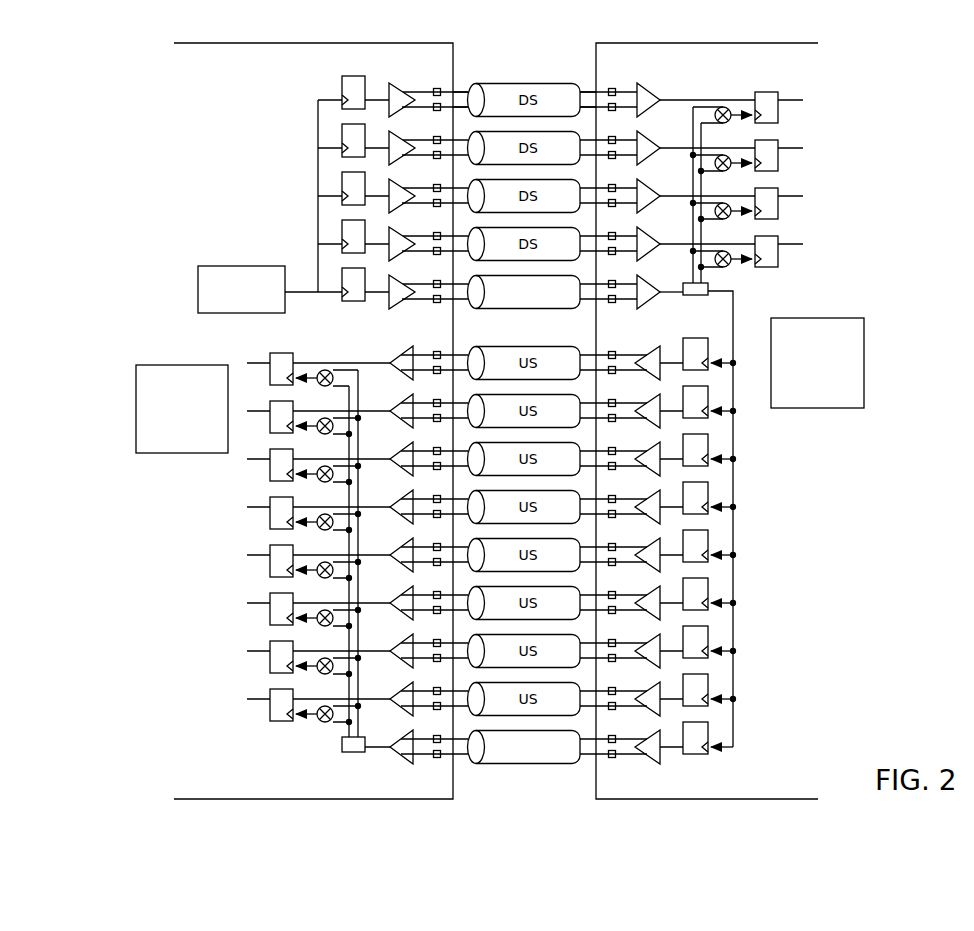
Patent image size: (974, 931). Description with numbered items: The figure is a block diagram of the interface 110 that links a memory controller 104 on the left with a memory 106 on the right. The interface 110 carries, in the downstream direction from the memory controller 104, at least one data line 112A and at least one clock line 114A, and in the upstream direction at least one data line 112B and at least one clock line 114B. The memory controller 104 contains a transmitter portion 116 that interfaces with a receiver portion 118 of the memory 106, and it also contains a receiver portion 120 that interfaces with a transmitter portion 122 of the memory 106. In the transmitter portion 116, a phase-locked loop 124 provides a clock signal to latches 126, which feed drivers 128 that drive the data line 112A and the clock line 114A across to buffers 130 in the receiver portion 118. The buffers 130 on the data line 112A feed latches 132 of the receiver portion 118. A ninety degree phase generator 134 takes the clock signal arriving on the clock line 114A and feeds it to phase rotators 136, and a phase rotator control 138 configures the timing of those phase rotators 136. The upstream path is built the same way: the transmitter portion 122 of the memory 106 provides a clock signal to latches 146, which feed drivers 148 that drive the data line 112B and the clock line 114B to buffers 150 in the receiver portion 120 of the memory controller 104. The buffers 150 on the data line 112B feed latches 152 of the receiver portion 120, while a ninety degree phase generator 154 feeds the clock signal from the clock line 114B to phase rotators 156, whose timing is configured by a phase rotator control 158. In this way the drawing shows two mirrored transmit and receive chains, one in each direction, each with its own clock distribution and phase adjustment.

The memory controller 104 is at (214, 71).
The memory 106 is at (781, 75).
The interface 110 is at (545, 58).
The data line 112A is at (532, 75).
The data line 112B is at (552, 347).
The clock line 114A is at (506, 311).
The clock line 114B is at (503, 769).
The transmitter portion 116 is at (232, 204).
The receiver portion 118 is at (865, 195).
The receiver portion 120 is at (140, 553).
The transmitter portion 122 is at (800, 600).
The phase-locked loop 124 is at (198, 268).
The latches 126 is at (326, 84).
The drivers 128 is at (401, 81).
The buffers 130 is at (648, 82).
The latches 132 is at (791, 256).
The ninety degree phase generator 134 is at (680, 294).
The phase rotators 136 is at (741, 279).
The phase rotator control 138 is at (864, 349).
The latches 146 is at (716, 763).
The drivers 148 is at (648, 764).
The buffers 150 is at (429, 771).
The latches 152 is at (272, 733).
The ninety degree phase generator 154 is at (342, 742).
The phase rotators 156 is at (324, 367).
The phase rotator control 158 is at (136, 372).